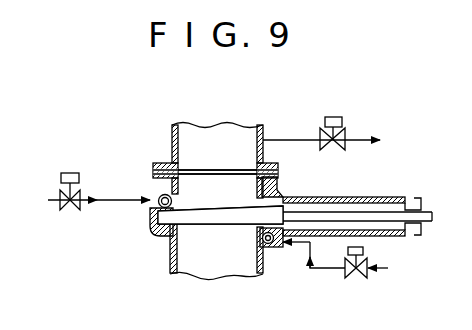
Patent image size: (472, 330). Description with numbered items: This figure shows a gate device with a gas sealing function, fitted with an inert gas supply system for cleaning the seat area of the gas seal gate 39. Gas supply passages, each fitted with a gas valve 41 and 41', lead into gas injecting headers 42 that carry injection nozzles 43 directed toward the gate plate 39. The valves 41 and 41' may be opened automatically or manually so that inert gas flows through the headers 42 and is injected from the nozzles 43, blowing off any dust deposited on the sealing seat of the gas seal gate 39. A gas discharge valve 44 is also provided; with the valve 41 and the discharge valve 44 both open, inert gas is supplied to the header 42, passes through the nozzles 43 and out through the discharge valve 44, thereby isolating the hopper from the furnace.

The gas seal gate 39 is at (214, 225).
The gas valve 41 is at (93, 171).
The gas valve 41' is at (335, 277).
The gas injecting header 42 is at (156, 196).
The injection nozzle 43 is at (152, 236).
The gas discharge valve 44 is at (342, 116).